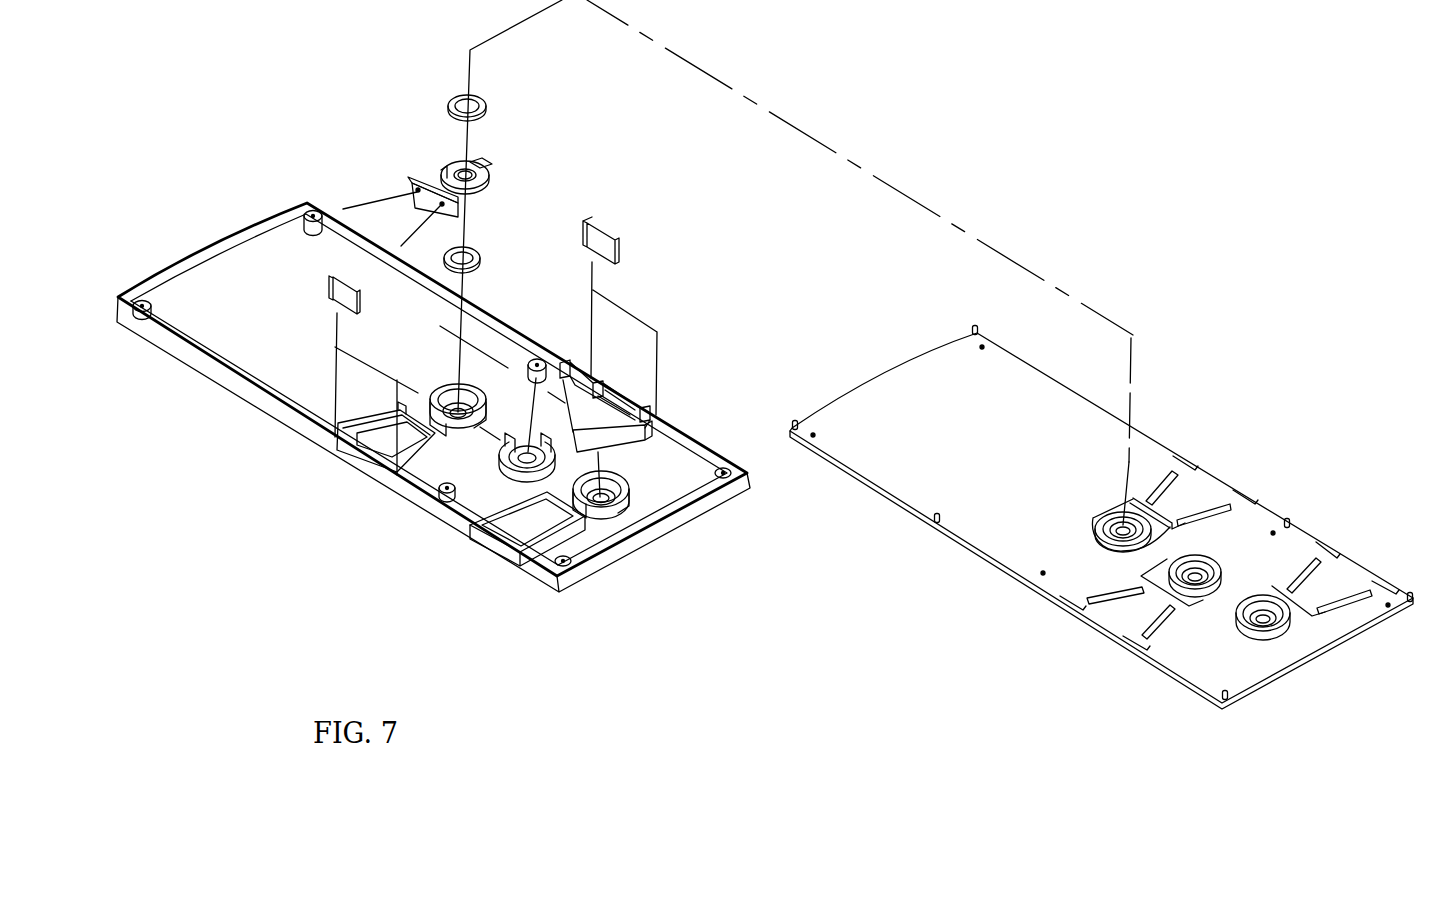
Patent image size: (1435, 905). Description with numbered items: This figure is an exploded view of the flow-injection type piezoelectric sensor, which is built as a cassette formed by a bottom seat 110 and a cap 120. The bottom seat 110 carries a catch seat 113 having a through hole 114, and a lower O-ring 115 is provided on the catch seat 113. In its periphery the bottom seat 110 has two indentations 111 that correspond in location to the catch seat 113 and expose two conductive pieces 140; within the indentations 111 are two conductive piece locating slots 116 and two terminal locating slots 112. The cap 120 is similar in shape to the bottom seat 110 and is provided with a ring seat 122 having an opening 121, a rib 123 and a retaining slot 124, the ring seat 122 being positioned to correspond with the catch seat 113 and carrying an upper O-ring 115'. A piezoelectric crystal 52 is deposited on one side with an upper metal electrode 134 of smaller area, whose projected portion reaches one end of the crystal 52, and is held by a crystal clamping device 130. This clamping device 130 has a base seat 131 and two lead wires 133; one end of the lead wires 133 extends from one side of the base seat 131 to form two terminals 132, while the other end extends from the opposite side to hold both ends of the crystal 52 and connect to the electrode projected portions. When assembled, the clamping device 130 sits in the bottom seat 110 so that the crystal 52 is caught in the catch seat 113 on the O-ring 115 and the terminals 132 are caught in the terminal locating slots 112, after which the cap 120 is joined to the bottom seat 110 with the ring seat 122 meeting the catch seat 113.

The bottom seat 110 is at (198, 332).
The indentations 111 is at (330, 423).
The terminal locating slots 112 is at (377, 455).
The catch seat 113 is at (480, 392).
The through hole 114 is at (462, 410).
The lower O-ring 115 is at (498, 229).
The upper O-ring 115' is at (508, 80).
The conductive piece locating slots 116 is at (327, 423).
The piezoelectric crystal 52 is at (487, 176).
The crystal clamping device 130 is at (407, 180).
The base seat 131 is at (418, 180).
The terminals 132 is at (343, 209).
The lead wires 133 is at (452, 178).
The upper metal electrode 134 is at (473, 165).
The conductive pieces 140 is at (331, 287).
The cap 120 is at (893, 471).
The opening 121 is at (1118, 527).
The ring seat 122 is at (1098, 521).
The rib 123 is at (1140, 512).
The retaining slot 124 is at (1240, 490).